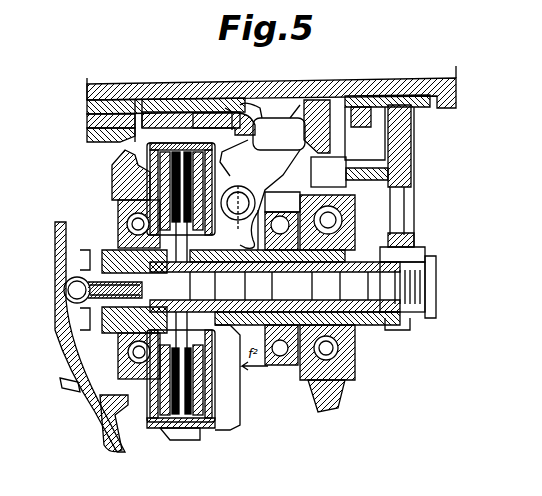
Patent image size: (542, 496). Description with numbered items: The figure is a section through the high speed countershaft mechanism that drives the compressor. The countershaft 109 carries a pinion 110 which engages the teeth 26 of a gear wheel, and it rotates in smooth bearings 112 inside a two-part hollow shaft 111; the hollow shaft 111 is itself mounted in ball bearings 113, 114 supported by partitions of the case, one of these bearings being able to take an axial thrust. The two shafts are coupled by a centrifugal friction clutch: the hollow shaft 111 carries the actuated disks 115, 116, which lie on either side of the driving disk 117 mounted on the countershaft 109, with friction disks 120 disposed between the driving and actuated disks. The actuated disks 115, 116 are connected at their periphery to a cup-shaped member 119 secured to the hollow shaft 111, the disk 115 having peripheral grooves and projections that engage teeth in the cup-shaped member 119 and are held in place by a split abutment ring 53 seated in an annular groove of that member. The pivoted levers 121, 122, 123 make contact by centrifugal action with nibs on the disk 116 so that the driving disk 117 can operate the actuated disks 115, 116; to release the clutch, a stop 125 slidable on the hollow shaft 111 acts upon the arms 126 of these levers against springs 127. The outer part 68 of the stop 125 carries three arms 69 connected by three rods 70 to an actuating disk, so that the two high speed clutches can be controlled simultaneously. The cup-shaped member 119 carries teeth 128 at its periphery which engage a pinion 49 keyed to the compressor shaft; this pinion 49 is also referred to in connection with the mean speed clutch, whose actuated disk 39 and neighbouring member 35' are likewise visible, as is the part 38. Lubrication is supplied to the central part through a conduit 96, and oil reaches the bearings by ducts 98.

The teeth 26 is at (407, 228).
The bracket 35' is at (97, 351).
The clutch housing 38 is at (148, 152).
The actuated disk 39 is at (228, 377).
The pinion 49 is at (205, 100).
The split abutment ring 53 is at (162, 162).
The outer part of stop 68 is at (290, 204).
The arms 69 is at (326, 126).
The rods 70 is at (340, 172).
The conduit 96 is at (112, 322).
The ducts 98 is at (168, 292).
The countershaft 109 is at (322, 290).
The pinion 110 is at (410, 322).
The hollow shaft 111 is at (90, 262).
The smooth bearings 112 is at (365, 218).
The ball bearing 113 is at (132, 214).
The ball bearing 114 is at (340, 202).
The actuated disk 115 is at (160, 185).
The actuated disk 116 is at (262, 126).
The driving disk 117 is at (232, 133).
The cup-shaped member 119 is at (250, 108).
The friction disks 120 is at (190, 412).
The pivoted lever 121 is at (287, 122).
The pivoted lever 122 is at (250, 198).
The pivoted lever 123 is at (279, 134).
The stop 125 is at (289, 290).
The arms 126 is at (252, 290).
The springs 127 is at (275, 287).
The teeth 128 is at (195, 437).